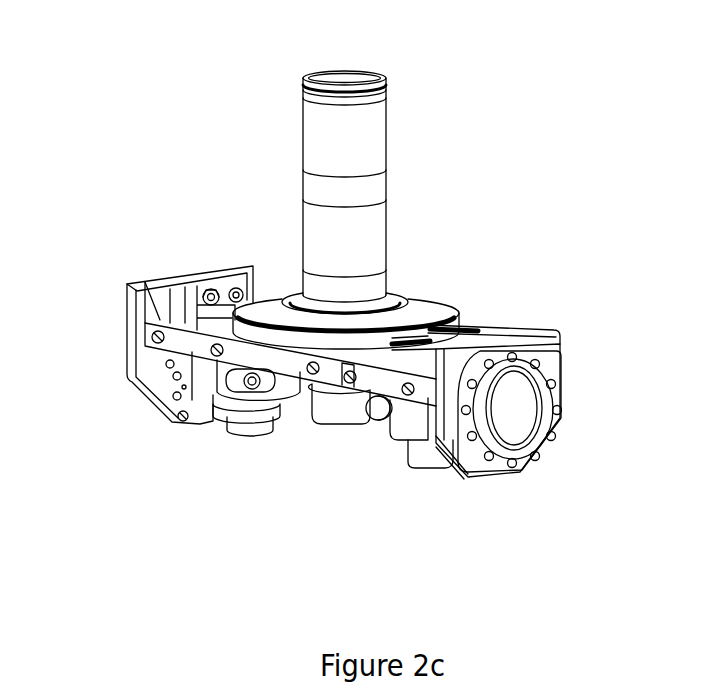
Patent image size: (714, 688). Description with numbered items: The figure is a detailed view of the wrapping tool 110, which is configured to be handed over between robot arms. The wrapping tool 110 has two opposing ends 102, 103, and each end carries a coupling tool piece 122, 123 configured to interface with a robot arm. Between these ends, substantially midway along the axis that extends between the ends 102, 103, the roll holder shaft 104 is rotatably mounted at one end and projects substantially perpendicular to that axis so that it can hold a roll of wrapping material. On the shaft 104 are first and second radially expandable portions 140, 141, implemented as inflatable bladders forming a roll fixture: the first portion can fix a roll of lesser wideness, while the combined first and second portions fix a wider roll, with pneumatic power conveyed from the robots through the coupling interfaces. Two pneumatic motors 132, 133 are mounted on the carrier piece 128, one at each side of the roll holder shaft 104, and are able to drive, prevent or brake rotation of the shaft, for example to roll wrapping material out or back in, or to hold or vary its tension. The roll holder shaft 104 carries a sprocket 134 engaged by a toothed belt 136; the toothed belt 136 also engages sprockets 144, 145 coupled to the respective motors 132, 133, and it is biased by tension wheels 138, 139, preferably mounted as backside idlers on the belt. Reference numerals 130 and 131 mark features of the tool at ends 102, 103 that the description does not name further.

The roll holder shaft 104 is at (343, 76).
The first radially expandable portion 140 is at (378, 128).
The second radially expandable portion 141 is at (378, 218).
The sprocket 134 is at (430, 300).
The first end 102 is at (188, 265).
The tension wheel 138 is at (216, 289).
The sprocket 144 is at (258, 300).
The coupling tool piece 122 is at (111, 343).
The plate edge 130 is at (153, 299).
The toothed belt 136 is at (348, 342).
The pneumatic motor 132 is at (230, 418).
The wrapping tool 110 is at (283, 433).
The carrier piece 128 is at (377, 421).
The pneumatic motor 133 is at (409, 468).
The second end 103 is at (584, 370).
The block top edge 131 is at (557, 345).
The sprocket 145 is at (487, 324).
The tension wheel 139 is at (492, 334).
The coupling tool piece 123 is at (567, 410).